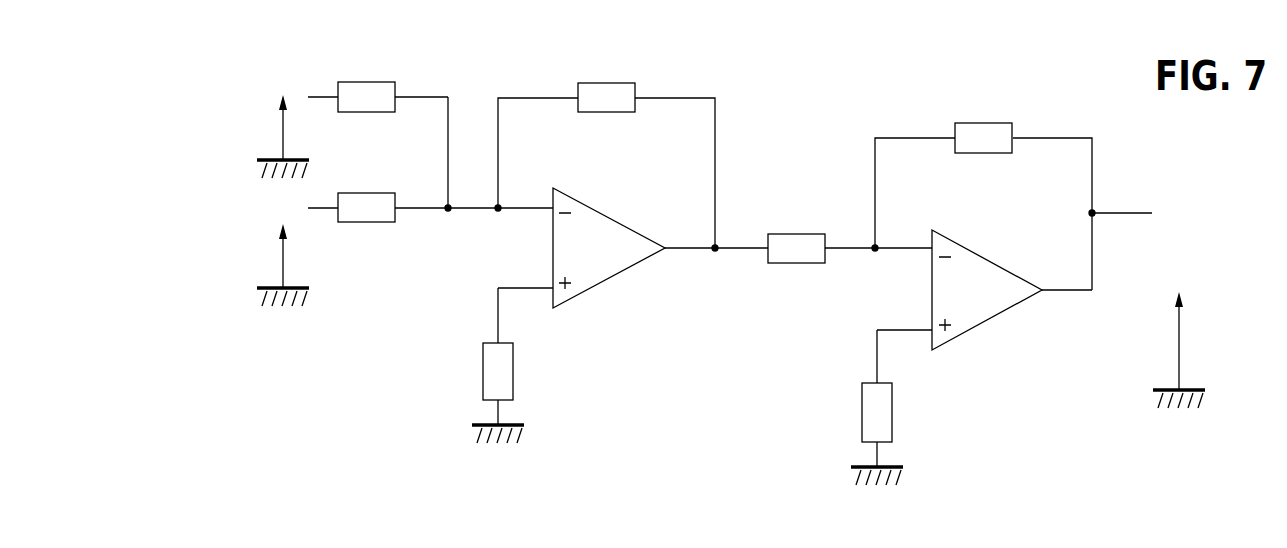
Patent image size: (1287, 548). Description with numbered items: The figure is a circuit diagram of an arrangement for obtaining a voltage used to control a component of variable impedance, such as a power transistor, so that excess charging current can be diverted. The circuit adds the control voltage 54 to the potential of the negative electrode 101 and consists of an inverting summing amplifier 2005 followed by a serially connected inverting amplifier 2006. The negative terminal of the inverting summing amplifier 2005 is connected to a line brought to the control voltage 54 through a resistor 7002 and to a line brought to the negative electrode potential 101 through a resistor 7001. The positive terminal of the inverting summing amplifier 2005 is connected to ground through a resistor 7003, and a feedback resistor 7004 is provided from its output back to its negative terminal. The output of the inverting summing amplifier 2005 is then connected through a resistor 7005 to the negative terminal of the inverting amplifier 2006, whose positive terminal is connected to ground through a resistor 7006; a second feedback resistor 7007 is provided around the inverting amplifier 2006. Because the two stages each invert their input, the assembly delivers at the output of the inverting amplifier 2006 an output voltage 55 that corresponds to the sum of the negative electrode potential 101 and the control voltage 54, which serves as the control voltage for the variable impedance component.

The negative electrode potential 101 is at (252, 127).
The control voltage 54 is at (222, 268).
The output voltage 55 is at (1212, 220).
The resistor 7001 is at (373, 82).
The resistor 7002 is at (377, 222).
The resistor 7003 is at (485, 385).
The feedback resistor 7004 is at (623, 82).
The resistor 7005 is at (802, 263).
The resistor 7006 is at (858, 425).
The feedback resistor 7007 is at (998, 123).
The inverting summing amplifier 2005 is at (610, 282).
The inverting amplifier 2006 is at (988, 323).